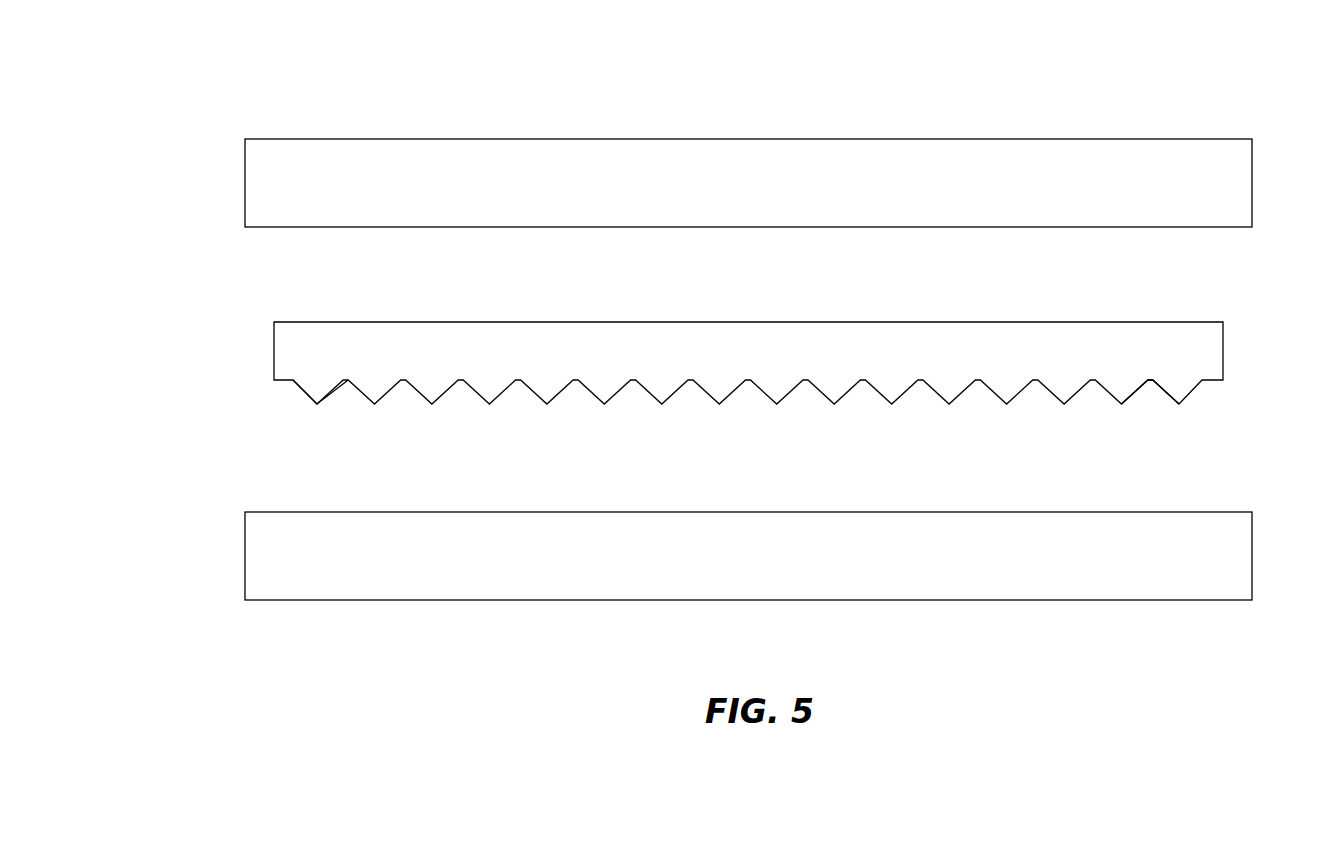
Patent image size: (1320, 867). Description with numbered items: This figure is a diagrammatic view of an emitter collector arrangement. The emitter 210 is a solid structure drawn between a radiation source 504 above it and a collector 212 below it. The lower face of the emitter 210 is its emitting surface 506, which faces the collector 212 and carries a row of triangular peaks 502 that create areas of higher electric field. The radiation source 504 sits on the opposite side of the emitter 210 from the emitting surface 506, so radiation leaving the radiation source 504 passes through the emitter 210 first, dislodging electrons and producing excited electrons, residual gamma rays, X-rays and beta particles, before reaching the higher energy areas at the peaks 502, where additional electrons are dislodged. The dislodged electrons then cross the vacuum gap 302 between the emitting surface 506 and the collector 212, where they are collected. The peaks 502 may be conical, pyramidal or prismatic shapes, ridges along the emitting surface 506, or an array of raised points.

The radiation source 504 is at (750, 148).
The emitter 210 is at (308, 353).
The peaks 502 is at (320, 403).
The emitting surface 506 is at (1193, 432).
The collector 212 is at (287, 577).
The vacuum gap 302 is at (266, 477).